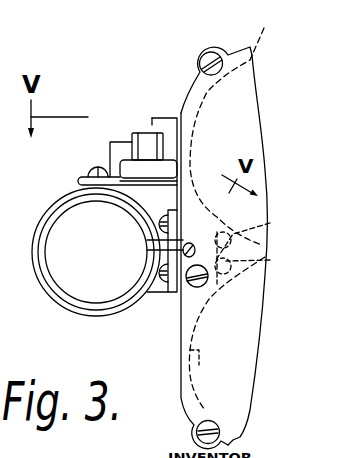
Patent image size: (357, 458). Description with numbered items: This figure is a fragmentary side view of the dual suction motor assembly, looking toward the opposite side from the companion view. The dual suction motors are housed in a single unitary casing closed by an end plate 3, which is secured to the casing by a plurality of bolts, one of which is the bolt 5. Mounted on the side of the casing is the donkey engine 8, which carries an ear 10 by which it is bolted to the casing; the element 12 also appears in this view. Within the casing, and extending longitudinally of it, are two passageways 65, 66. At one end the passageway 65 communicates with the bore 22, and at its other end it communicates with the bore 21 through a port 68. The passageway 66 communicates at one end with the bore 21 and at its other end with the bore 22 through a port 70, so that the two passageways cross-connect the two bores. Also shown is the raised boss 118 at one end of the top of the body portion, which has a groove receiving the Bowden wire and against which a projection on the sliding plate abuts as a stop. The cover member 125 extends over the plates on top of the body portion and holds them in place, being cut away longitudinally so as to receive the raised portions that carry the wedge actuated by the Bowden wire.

The end plate 3 is at (207, 98).
The bolt 5 is at (200, 52).
The donkey engine 8 is at (79, 321).
The ear 10 is at (158, 240).
The clamp screw 12 is at (158, 270).
The bore 21 is at (232, 212).
The bore 22 is at (193, 367).
The passageway 65 is at (241, 250).
The passageway 66 is at (257, 258).
The port 68 is at (217, 226).
The port 70 is at (223, 270).
The raised boss 118 is at (108, 155).
The cover member 125 is at (78, 178).